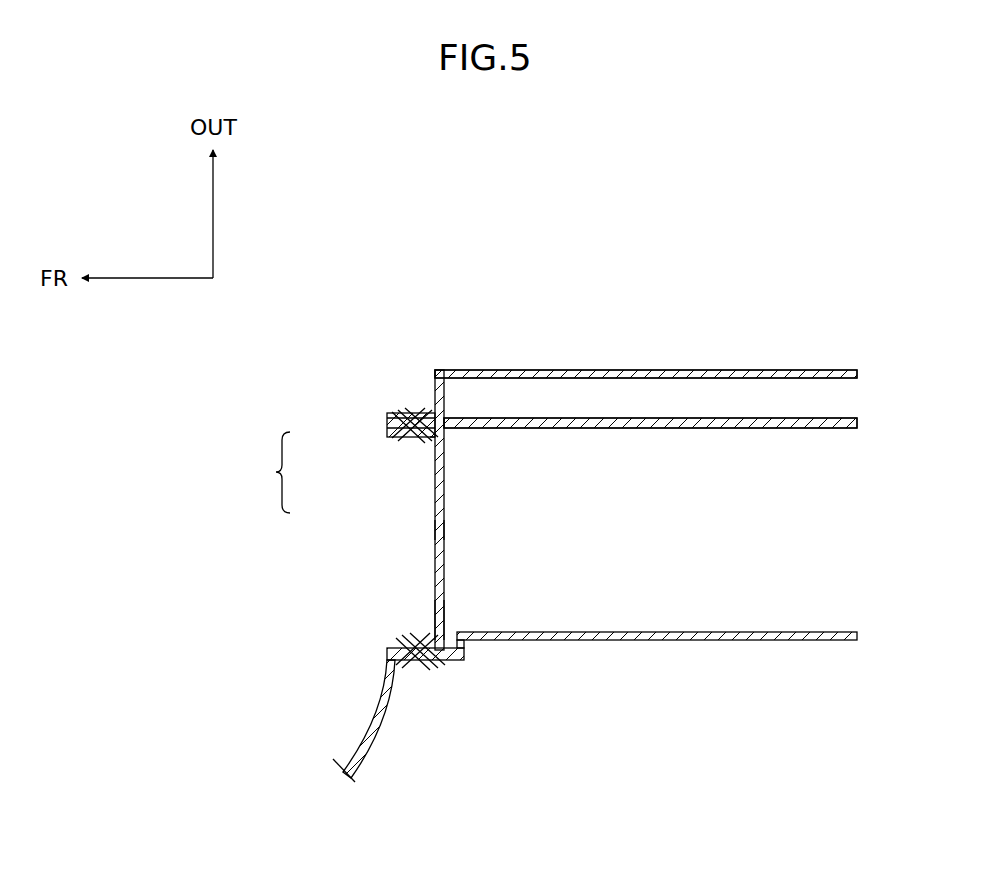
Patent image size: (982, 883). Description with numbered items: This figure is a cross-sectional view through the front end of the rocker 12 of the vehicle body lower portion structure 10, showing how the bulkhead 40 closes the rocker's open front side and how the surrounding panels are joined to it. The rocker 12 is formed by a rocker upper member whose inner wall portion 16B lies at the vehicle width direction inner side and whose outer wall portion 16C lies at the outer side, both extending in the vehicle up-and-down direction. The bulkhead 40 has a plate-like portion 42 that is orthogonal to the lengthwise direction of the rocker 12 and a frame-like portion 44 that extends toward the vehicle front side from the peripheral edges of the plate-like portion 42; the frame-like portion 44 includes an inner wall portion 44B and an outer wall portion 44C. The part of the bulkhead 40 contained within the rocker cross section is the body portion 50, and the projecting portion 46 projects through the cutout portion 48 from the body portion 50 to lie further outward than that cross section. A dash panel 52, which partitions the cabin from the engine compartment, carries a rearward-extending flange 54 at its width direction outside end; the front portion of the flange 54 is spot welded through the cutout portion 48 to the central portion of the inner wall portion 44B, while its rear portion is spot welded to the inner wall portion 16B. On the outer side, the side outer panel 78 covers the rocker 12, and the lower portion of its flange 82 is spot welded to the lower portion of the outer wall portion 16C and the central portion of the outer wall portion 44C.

The vehicle body lower portion structure 10 is at (650, 243).
The side outer panel 78 is at (605, 370).
The outer wall portion 16C is at (692, 418).
The rocker 12 is at (760, 417).
The plate-like portion 42 is at (435, 505).
The body portion 50 is at (435, 527).
The projecting portion 46 is at (435, 615).
The frame-like portion 44 is at (398, 440).
The flange 82 is at (400, 412).
The bulkhead 40 is at (262, 472).
The outer wall portion 44C is at (415, 440).
The inner wall portion 16B is at (742, 641).
The cutout portion 48 is at (463, 660).
The flange 54 is at (445, 662).
The inner wall portion 44B is at (390, 643).
The dash panel 52 is at (372, 748).